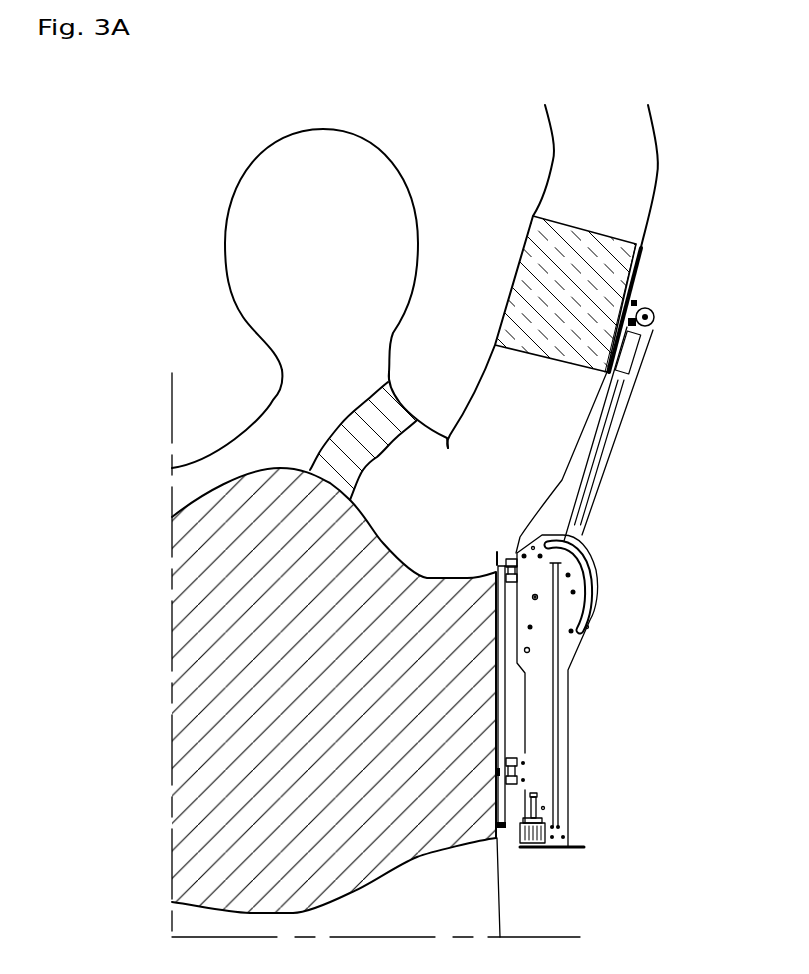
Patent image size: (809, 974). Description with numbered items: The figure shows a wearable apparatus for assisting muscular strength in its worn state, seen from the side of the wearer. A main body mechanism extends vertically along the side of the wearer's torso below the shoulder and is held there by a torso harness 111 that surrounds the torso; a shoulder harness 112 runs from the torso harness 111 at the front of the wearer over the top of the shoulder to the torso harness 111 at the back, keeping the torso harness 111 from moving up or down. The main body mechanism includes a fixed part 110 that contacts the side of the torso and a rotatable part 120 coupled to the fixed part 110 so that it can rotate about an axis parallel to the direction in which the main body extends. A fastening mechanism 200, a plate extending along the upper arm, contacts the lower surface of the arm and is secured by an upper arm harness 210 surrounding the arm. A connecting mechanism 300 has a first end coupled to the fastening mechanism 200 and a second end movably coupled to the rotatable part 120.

The fixed part 110 is at (505, 803).
The torso harness 111 is at (188, 745).
The shoulder harness 112 is at (360, 455).
The rotatable part 120 is at (568, 733).
The fastening mechanism 200 is at (637, 293).
The upper arm harness 210 is at (618, 272).
The connecting mechanism 300 is at (615, 432).